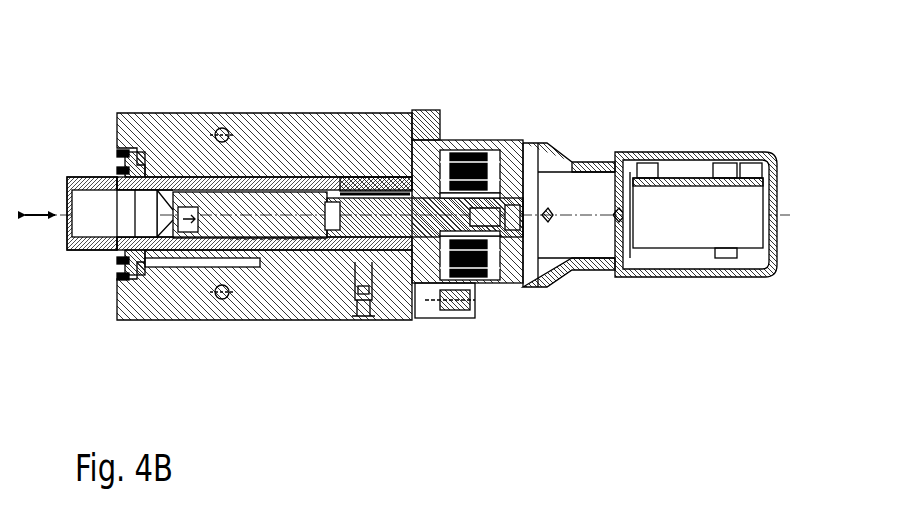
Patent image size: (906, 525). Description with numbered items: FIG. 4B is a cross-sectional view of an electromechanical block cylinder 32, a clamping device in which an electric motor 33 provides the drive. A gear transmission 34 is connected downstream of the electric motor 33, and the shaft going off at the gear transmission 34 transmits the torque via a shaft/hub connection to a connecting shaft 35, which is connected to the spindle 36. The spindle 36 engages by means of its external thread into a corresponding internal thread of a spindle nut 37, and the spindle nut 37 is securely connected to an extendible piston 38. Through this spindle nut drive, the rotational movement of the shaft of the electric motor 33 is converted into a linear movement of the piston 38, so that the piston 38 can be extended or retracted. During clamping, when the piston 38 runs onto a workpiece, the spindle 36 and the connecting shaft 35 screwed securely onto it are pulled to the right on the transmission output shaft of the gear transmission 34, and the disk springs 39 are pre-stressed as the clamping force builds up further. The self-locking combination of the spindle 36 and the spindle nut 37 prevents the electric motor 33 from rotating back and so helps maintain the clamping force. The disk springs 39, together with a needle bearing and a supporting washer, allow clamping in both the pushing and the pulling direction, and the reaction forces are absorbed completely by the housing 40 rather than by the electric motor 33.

The electromechanical block cylinder 32 is at (156, 78).
The electric motor 33 is at (686, 197).
The gear transmission 34 is at (593, 185).
The connecting shaft 35 is at (355, 222).
The spindle 36 is at (232, 222).
The spindle nut 37 is at (358, 188).
The piston 38 is at (102, 243).
The disk springs 39 is at (482, 263).
The housing 40 is at (428, 120).